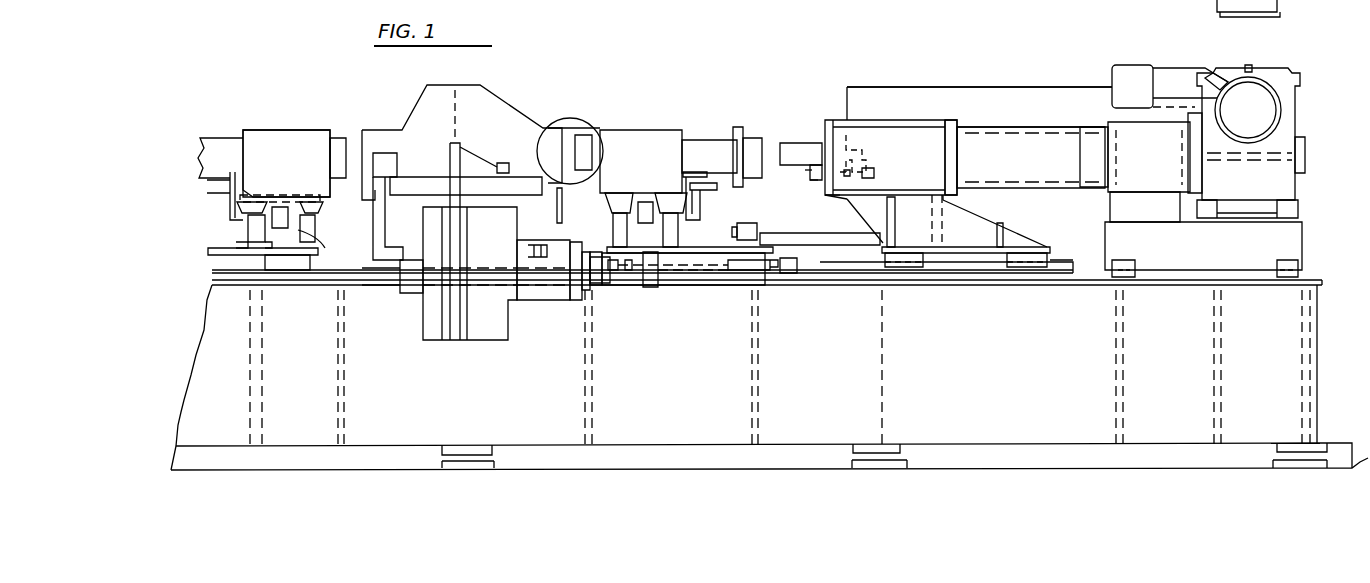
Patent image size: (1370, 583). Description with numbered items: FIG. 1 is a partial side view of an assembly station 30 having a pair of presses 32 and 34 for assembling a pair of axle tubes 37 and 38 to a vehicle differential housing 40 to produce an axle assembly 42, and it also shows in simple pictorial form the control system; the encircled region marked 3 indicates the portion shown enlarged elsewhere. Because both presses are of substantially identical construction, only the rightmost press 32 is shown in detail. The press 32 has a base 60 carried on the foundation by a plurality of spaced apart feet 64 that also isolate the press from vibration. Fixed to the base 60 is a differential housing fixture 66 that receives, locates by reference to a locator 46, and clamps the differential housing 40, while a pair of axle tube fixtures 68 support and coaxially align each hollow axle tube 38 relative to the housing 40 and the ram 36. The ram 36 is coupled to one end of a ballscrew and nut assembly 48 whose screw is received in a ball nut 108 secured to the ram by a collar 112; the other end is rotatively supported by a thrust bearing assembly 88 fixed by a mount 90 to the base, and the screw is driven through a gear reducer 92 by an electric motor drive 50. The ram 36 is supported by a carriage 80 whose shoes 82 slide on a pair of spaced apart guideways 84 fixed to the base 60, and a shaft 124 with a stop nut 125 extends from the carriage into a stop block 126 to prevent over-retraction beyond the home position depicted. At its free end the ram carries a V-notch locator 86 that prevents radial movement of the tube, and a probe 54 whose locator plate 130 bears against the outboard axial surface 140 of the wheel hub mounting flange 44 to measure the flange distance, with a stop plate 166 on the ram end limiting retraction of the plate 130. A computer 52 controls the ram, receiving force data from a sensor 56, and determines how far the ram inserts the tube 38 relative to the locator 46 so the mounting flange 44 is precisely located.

The detail circle of FIG. 3 is at (590, 118).
The assembly station 30 is at (1289, 47).
The press 32 is at (880, 39).
The press 34 is at (299, 86).
The ram 36 is at (924, 171).
The axle tube 37 is at (221, 119).
The axle tube 38 is at (340, 142).
The differential housing 40 is at (496, 108).
The axle assembly 42 is at (402, 92).
The wheel hub mounting flange 44 is at (742, 124).
The locator 46 is at (503, 162).
The ballscrew and nut assembly 48 is at (1008, 120).
The drive 50 is at (1265, 107).
The computer 52 is at (1142, 96).
The probe 54 is at (809, 196).
The sensor 56 is at (1222, 75).
The base 60 is at (210, 327).
The feet 64 is at (496, 453).
The differential housing fixture 66 is at (459, 137).
The axle tube fixture 68 is at (287, 140).
The carriage 80 is at (975, 236).
The shoes 82 is at (1027, 262).
The guideways 84 is at (870, 265).
The locator 86 is at (805, 142).
The thrust bearing assembly 88 is at (1155, 160).
The mount 90 is at (1212, 257).
The gear reducer 92 is at (1262, 190).
The ball nut 108 is at (1018, 162).
The collar 112 is at (955, 118).
The shaft 124 is at (832, 236).
The stop nut 125 is at (728, 242).
The stop block 126 is at (745, 223).
The locator plate 130 is at (805, 176).
The outboard axial surface 140 is at (774, 141).
The stop plate 166 is at (818, 176).